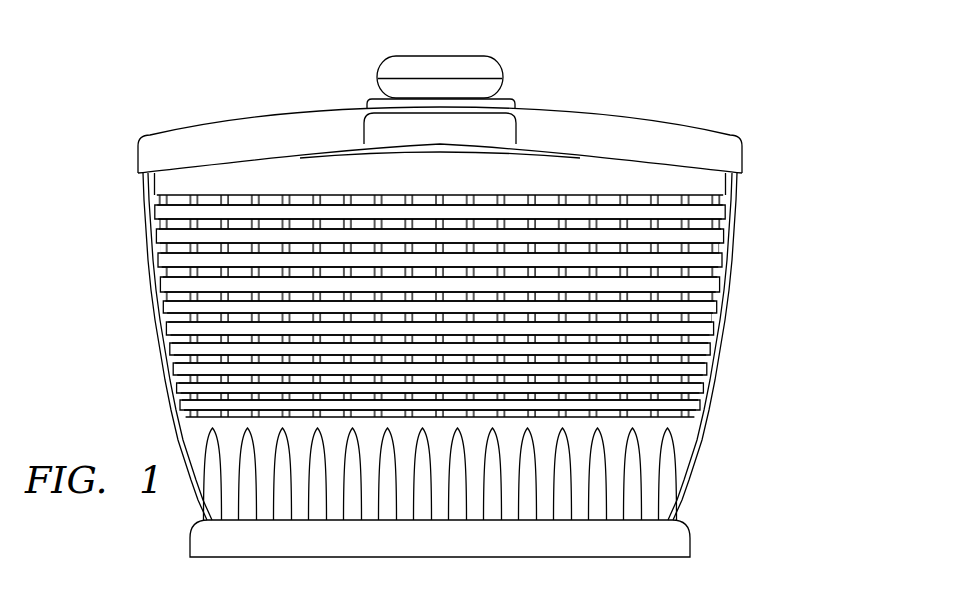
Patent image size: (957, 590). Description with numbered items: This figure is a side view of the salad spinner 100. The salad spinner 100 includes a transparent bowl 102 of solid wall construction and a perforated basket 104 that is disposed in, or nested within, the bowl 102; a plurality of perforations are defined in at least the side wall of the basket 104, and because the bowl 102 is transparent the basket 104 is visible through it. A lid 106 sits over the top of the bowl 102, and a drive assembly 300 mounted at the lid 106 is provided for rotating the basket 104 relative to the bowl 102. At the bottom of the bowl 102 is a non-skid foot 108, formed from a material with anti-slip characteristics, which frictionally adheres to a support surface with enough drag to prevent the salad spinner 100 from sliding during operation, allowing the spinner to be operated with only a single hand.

The salad spinner 100 is at (797, 80).
The transparent bowl 102 is at (738, 190).
The perforated basket 104 is at (718, 285).
The lid 106 is at (712, 152).
The non-skid foot 108 is at (670, 545).
The drive assembly 300 is at (483, 72).